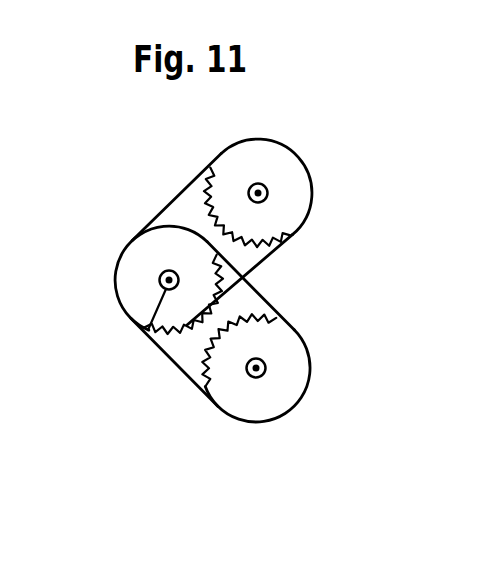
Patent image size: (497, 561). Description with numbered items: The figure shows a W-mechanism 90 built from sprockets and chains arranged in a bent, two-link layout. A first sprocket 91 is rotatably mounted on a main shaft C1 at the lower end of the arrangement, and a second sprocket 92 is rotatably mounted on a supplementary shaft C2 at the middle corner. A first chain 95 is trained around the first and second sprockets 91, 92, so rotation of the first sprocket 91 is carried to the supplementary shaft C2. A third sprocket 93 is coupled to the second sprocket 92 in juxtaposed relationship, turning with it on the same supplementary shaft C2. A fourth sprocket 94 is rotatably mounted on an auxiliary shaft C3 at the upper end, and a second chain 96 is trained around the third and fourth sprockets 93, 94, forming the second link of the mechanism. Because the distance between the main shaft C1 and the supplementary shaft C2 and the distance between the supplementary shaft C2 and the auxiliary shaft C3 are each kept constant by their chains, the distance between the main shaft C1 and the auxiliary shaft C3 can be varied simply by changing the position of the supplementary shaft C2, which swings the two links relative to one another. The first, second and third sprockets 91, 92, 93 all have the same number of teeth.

The W-mechanism 90 is at (363, 220).
The first sprocket 91 is at (282, 391).
The second sprocket 92 is at (137, 293).
The third sprocket 93 is at (183, 294).
The fourth sprocket 94 is at (277, 177).
The first chain 95 is at (183, 375).
The housing line 96 is at (177, 200).
The main shaft C1 is at (253, 373).
The supplementary shaft C2 is at (148, 330).
The auxiliary shaft C3 is at (269, 195).